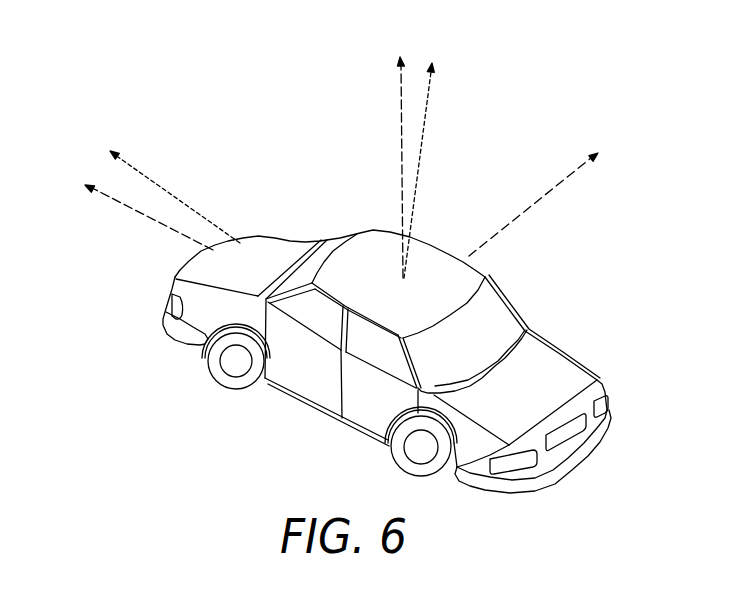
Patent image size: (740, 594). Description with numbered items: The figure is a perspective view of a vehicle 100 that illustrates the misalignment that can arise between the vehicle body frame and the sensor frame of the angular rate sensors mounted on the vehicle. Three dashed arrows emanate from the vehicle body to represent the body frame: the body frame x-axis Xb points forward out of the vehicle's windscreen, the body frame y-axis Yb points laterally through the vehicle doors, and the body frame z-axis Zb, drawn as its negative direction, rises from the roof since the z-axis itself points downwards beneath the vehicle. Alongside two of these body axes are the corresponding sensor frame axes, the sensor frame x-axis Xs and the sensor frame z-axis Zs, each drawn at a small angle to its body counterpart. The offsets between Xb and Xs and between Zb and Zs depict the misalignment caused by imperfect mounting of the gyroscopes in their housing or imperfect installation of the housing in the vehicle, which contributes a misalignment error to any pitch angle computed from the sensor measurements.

The vehicle 100 is at (568, 350).
The vehicle body frame x-axis Xb is at (136, 205).
The sensor frame x-axis Xs is at (164, 185).
The vehicle body frame z-axis Zb is at (402, 154).
The sensor frame z-axis Zs is at (427, 156).
The vehicle body frame y-axis Yb is at (548, 192).